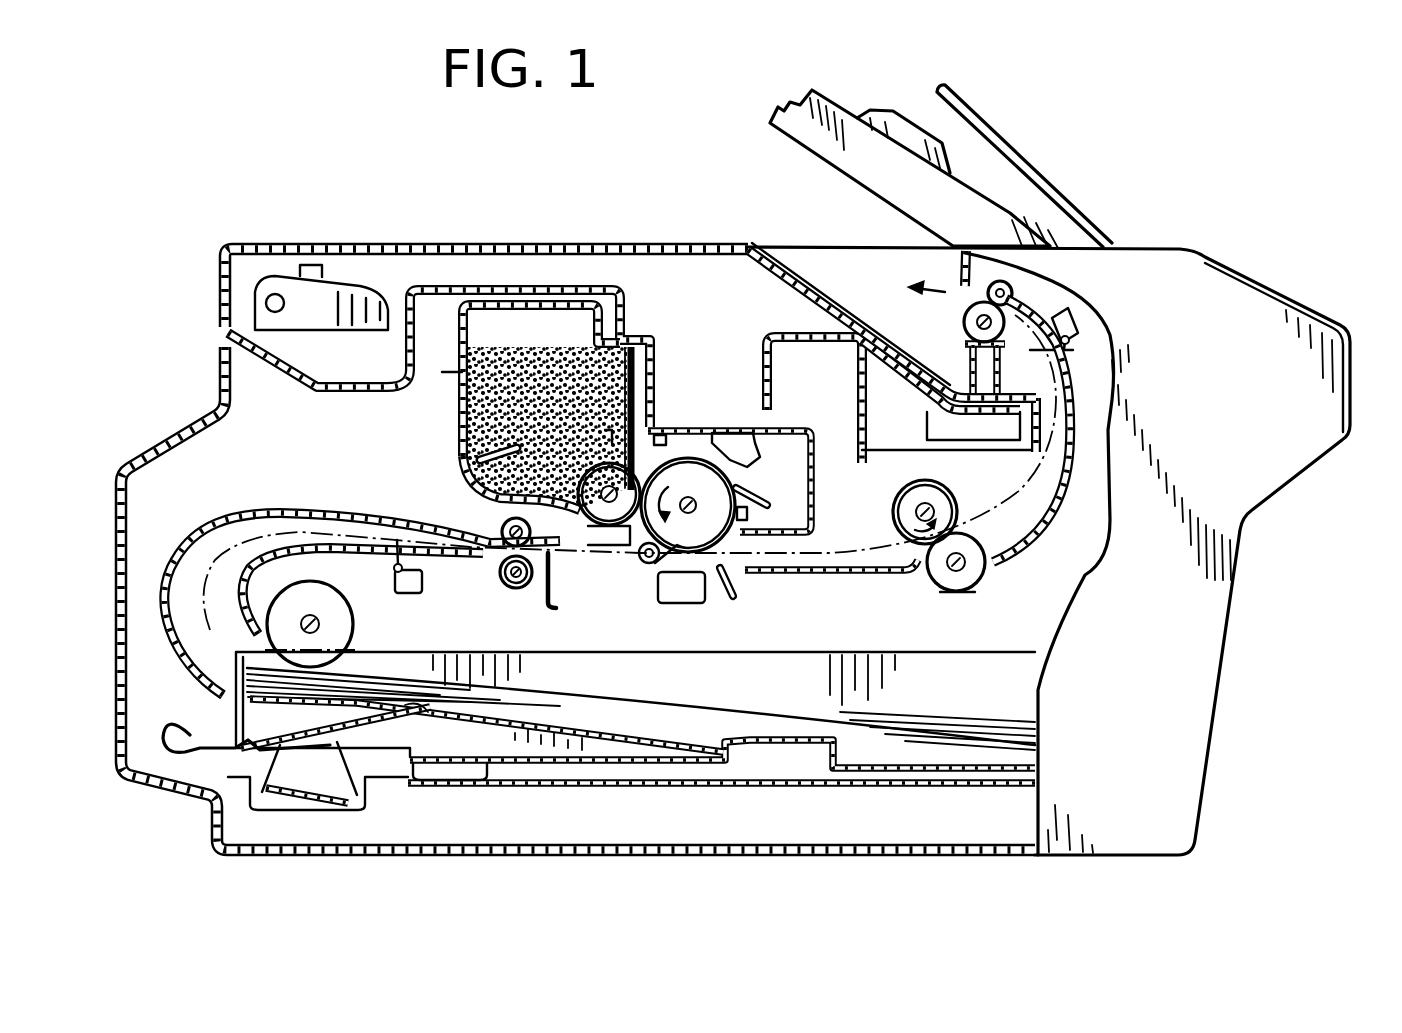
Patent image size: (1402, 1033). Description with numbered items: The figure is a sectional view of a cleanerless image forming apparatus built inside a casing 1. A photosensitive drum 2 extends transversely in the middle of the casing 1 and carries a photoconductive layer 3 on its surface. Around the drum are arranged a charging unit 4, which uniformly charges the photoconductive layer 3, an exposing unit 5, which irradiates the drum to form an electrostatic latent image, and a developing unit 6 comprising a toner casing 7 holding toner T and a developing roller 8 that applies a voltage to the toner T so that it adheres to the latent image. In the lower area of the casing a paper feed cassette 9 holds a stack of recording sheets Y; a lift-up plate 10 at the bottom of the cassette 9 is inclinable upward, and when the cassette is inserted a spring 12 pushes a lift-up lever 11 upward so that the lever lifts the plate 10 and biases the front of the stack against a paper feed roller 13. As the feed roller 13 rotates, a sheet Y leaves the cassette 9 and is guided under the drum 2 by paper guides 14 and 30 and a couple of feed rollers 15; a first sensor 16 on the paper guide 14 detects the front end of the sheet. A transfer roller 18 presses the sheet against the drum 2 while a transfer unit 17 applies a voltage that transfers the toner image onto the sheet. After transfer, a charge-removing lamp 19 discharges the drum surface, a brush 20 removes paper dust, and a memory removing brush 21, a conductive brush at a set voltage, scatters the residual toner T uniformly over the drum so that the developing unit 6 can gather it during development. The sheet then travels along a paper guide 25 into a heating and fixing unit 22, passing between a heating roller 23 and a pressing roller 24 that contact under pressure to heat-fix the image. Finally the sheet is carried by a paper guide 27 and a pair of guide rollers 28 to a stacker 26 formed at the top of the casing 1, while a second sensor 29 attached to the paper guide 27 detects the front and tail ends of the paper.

The casing 1 is at (1190, 731).
The photosensitive drum 2 is at (686, 480).
The photoconductive layer 3 is at (660, 565).
The charging unit 4 is at (745, 440).
The exposing unit 5 is at (670, 433).
The developing unit 6 is at (460, 420).
The toner casing 7 is at (463, 463).
The developing roller 8 is at (598, 507).
The paper feed cassette 9 is at (862, 653).
The lift-up plate 10 is at (423, 717).
The lift-up lever 11 is at (187, 733).
The spring 12 is at (343, 807).
The paper feed roller 13 is at (343, 630).
The paper guide 14 is at (282, 510).
The feed rollers 15 is at (500, 522).
The first sensor 16 is at (422, 595).
The transfer unit 17 is at (683, 597).
The transfer roller 18 is at (648, 565).
The charge-removing lamp 19 is at (737, 590).
The brush 20 is at (747, 518).
The memory removing brush 21 is at (768, 501).
The heating and fixing unit 22 is at (943, 592).
The heating roller 23 is at (943, 507).
The pressing roller 24 is at (975, 575).
The paper guide 25 is at (807, 580).
The stacker 26 is at (843, 312).
The paper guide 27 is at (1063, 520).
The guide rollers 28 is at (962, 320).
The second sensor 29 is at (1070, 318).
The paper guide 30 is at (553, 607).
The toner T is at (632, 342).
The recording sheets Y is at (600, 710).